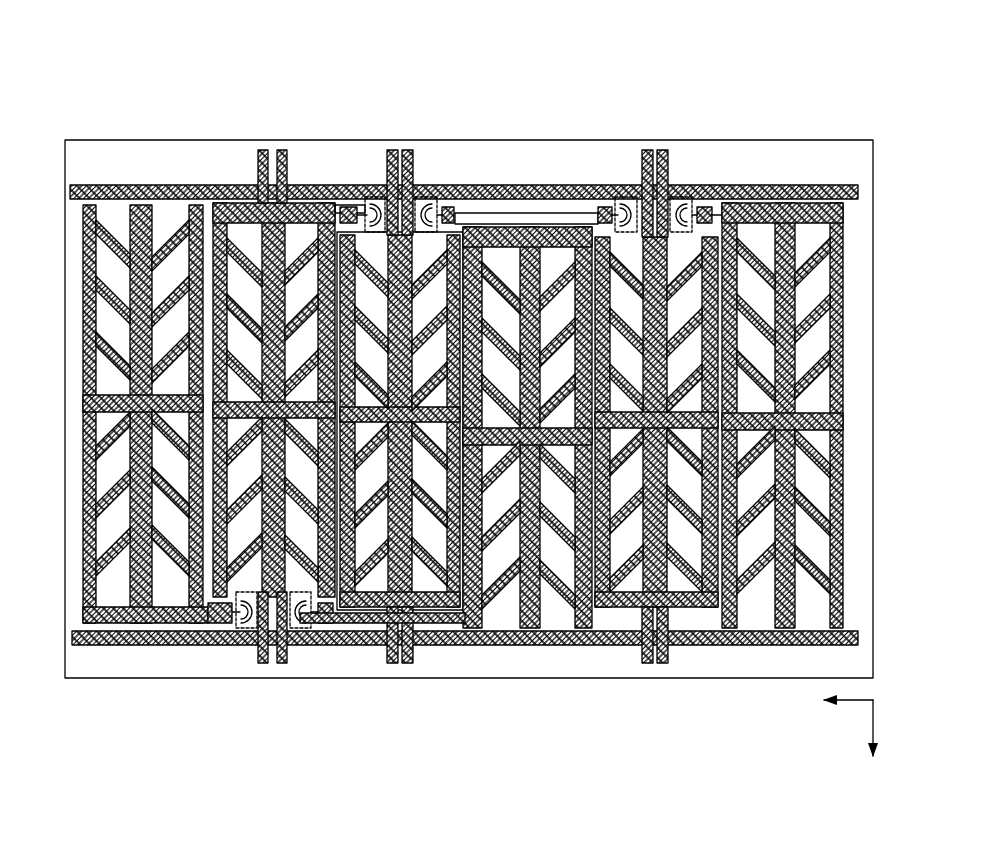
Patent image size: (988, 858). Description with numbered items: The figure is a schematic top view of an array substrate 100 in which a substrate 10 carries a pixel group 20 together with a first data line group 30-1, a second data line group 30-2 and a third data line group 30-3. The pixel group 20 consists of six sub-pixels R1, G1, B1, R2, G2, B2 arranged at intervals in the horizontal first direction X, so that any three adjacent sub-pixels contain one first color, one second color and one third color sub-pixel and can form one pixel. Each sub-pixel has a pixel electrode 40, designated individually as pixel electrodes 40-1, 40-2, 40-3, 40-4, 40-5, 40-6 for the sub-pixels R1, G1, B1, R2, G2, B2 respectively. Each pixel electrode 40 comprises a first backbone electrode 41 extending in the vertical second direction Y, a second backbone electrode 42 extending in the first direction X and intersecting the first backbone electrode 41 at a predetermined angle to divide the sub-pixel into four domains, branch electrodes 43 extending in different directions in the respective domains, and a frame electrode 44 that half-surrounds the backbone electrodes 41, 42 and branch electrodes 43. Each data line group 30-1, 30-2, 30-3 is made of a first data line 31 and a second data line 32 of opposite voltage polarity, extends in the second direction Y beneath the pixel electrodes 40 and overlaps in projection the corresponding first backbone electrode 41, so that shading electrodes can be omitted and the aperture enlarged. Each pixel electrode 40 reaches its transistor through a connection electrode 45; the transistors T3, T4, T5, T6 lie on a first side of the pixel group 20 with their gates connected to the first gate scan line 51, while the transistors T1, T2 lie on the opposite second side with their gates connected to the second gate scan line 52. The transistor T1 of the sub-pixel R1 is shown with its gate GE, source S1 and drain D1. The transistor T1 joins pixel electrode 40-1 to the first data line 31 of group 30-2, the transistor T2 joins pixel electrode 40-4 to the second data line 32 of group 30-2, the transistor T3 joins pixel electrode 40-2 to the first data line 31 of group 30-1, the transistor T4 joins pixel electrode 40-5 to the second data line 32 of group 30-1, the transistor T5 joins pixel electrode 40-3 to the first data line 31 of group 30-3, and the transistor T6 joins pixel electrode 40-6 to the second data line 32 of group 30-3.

The array substrate 100 is at (200, 40).
The substrate 10 is at (853, 140).
The pixel group 20 is at (590, 426).
The pixel electrode 40 is at (170, 70).
The pixel electrode of third color sub-pixel R1 40-1 is at (145, 348).
The pixel electrode of second color sub-pixel G1 40-2 is at (300, 212).
The pixel electrode of first color sub-pixel B1 40-3 is at (457, 242).
The pixel electrode of third color sub-pixel R2 40-4 is at (512, 243).
The pixel electrode of second color sub-pixel G2 40-5 is at (606, 240).
The pixel electrode of first color sub-pixel B2 40-6 is at (732, 205).
The first backbone electrode 41 is at (140, 258).
The second backbone electrode 42 is at (168, 260).
The branch electrode 43 is at (116, 236).
The frame electrode 44 is at (195, 212).
The connection electrode 45 is at (358, 623).
The first gate scan line 51 is at (86, 192).
The second gate scan line 52 is at (78, 647).
The first data line group 30-1 is at (425, 100).
The second data line group 30-2 is at (463, 366).
The third data line group 30-3 is at (680, 100).
The first data line 31 is at (262, 152).
The second data line 32 is at (482, 383).
The transistor of third color sub-pixel R1 T1 is at (231, 668).
The transistor of third color sub-pixel R2 T2 is at (317, 640).
The transistor of second color sub-pixel G1 T3 is at (358, 197).
The transistor of second color sub-pixel G2 T4 is at (432, 198).
The transistor of first color sub-pixel B1 T5 is at (623, 198).
The transistor of first color sub-pixel B2 T6 is at (690, 200).
The drain D1 is at (230, 623).
The gate GE is at (246, 612).
The source S1 is at (252, 632).
The third color sub-pixel R1 is at (145, 400).
The second color sub-pixel G1 is at (281, 342).
The first color sub-pixel B1 is at (426, 407).
The third color sub-pixel R2 is at (526, 408).
The second color sub-pixel G2 is at (646, 408).
The first color sub-pixel B2 is at (782, 408).